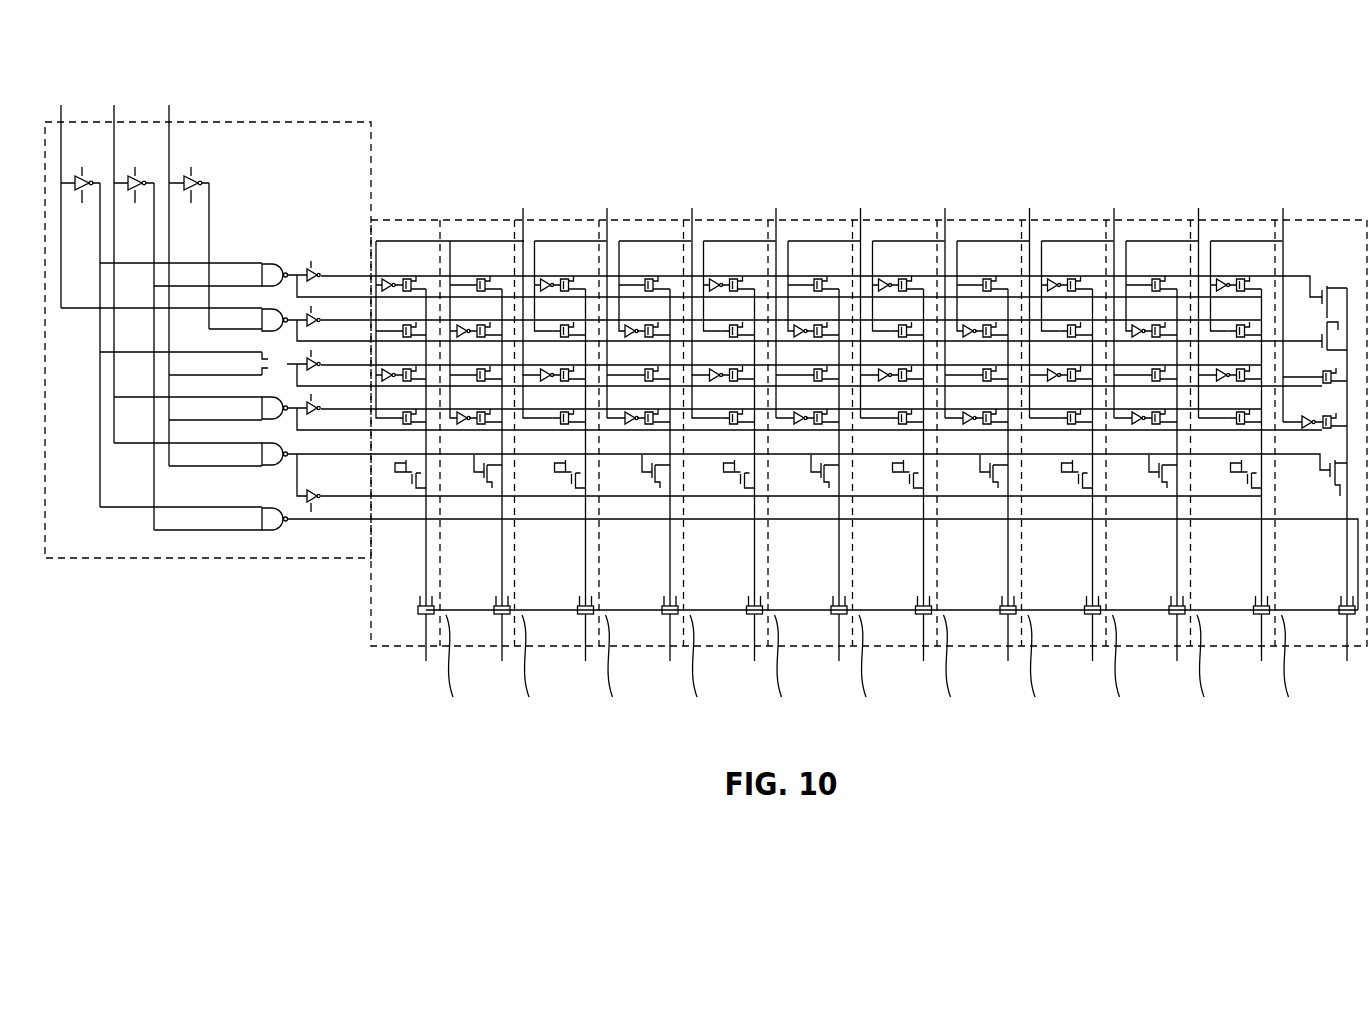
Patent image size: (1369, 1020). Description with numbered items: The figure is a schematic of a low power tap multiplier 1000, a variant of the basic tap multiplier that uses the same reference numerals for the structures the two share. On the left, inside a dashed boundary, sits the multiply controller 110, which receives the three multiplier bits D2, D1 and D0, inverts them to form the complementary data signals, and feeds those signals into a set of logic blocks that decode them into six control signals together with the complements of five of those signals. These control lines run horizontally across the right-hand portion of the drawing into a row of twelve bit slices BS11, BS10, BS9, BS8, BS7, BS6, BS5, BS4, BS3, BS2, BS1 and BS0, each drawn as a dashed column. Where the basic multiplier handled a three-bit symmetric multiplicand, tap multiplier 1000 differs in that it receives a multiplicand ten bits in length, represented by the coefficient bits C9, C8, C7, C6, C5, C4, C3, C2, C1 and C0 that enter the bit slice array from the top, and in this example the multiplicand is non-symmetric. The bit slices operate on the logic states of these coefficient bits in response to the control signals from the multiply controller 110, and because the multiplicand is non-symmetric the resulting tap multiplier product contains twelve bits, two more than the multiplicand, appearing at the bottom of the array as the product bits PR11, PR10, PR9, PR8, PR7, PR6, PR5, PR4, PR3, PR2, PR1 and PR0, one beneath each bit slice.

The multiply controller 110 is at (288, 121).
The low power tap multiplier 1000 is at (1108, 106).
The multiplier bit D2 is at (62, 193).
The multiplier bit D1 is at (114, 261).
The multiplier bit D0 is at (172, 272).
The bit slice BS11 is at (450, 379).
The bit slice BS10 is at (471, 399).
The bit slice BS9 is at (561, 399).
The bit slice BS8 is at (645, 399).
The bit slice BS7 is at (730, 399).
The bit slice BS6 is at (814, 399).
The bit slice BS5 is at (899, 399).
The bit slice BS4 is at (983, 399).
The bit slice BS3 is at (1068, 399).
The bit slice BS2 is at (1152, 399).
The bit slice BS1 is at (1237, 399).
The bit slice BS0 is at (1311, 399).
The coefficient bit C9 is at (523, 300).
The coefficient bit C8 is at (607, 300).
The coefficient bit C7 is at (692, 300).
The coefficient bit C6 is at (776, 300).
The coefficient bit C5 is at (860, 300).
The coefficient bit C4 is at (945, 300).
The coefficient bit C3 is at (1029, 300).
The coefficient bit C2 is at (1113, 300).
The coefficient bit C1 is at (1198, 300).
The coefficient bit C0 is at (1282, 302).
The product bit PR11 is at (425, 642).
The product bit PR10 is at (502, 642).
The product bit PR9 is at (588, 642).
The product bit PR8 is at (672, 642).
The product bit PR7 is at (757, 642).
The product bit PR6 is at (841, 642).
The product bit PR5 is at (926, 642).
The product bit PR4 is at (1010, 642).
The product bit PR3 is at (1094, 642).
The product bit PR2 is at (1179, 642).
The product bit PR1 is at (1264, 642).
The product bit PR0 is at (1349, 642).